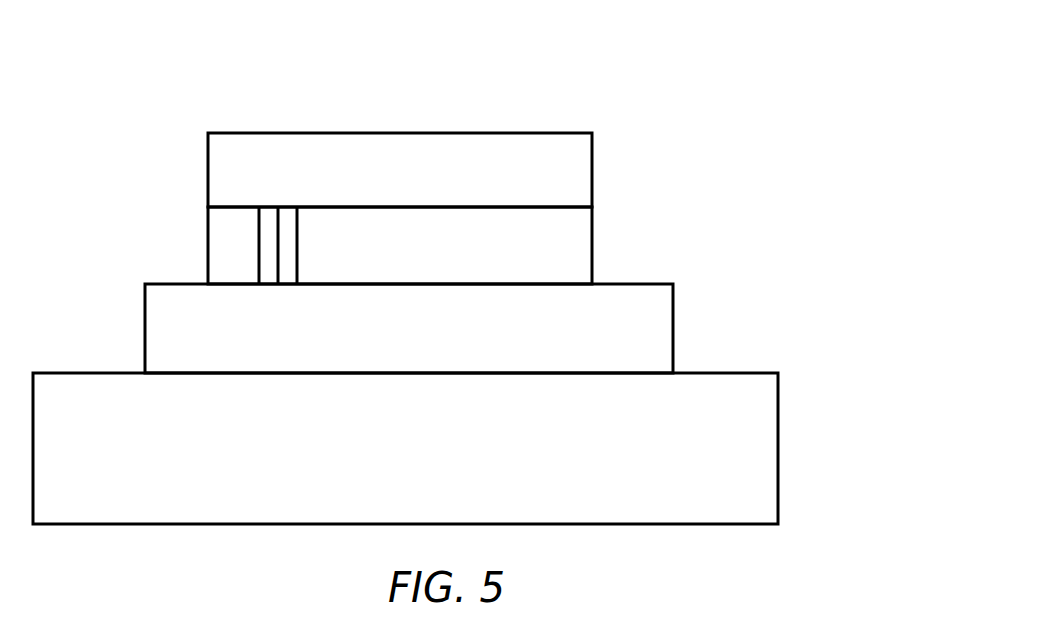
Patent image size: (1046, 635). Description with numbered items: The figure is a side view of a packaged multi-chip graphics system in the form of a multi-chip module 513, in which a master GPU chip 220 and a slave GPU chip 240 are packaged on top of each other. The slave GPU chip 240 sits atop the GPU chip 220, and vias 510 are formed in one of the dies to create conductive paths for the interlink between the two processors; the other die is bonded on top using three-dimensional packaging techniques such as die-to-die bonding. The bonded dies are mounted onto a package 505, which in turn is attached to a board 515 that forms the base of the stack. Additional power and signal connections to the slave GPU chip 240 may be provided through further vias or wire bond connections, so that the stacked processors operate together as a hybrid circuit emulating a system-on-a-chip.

The multi-chip module 513 is at (405, 271).
The board 515 is at (609, 452).
The package 505 is at (610, 347).
The GPU chip 220 is at (569, 253).
The slave GPU chip 240 is at (569, 183).
The vias 510 is at (245, 246).